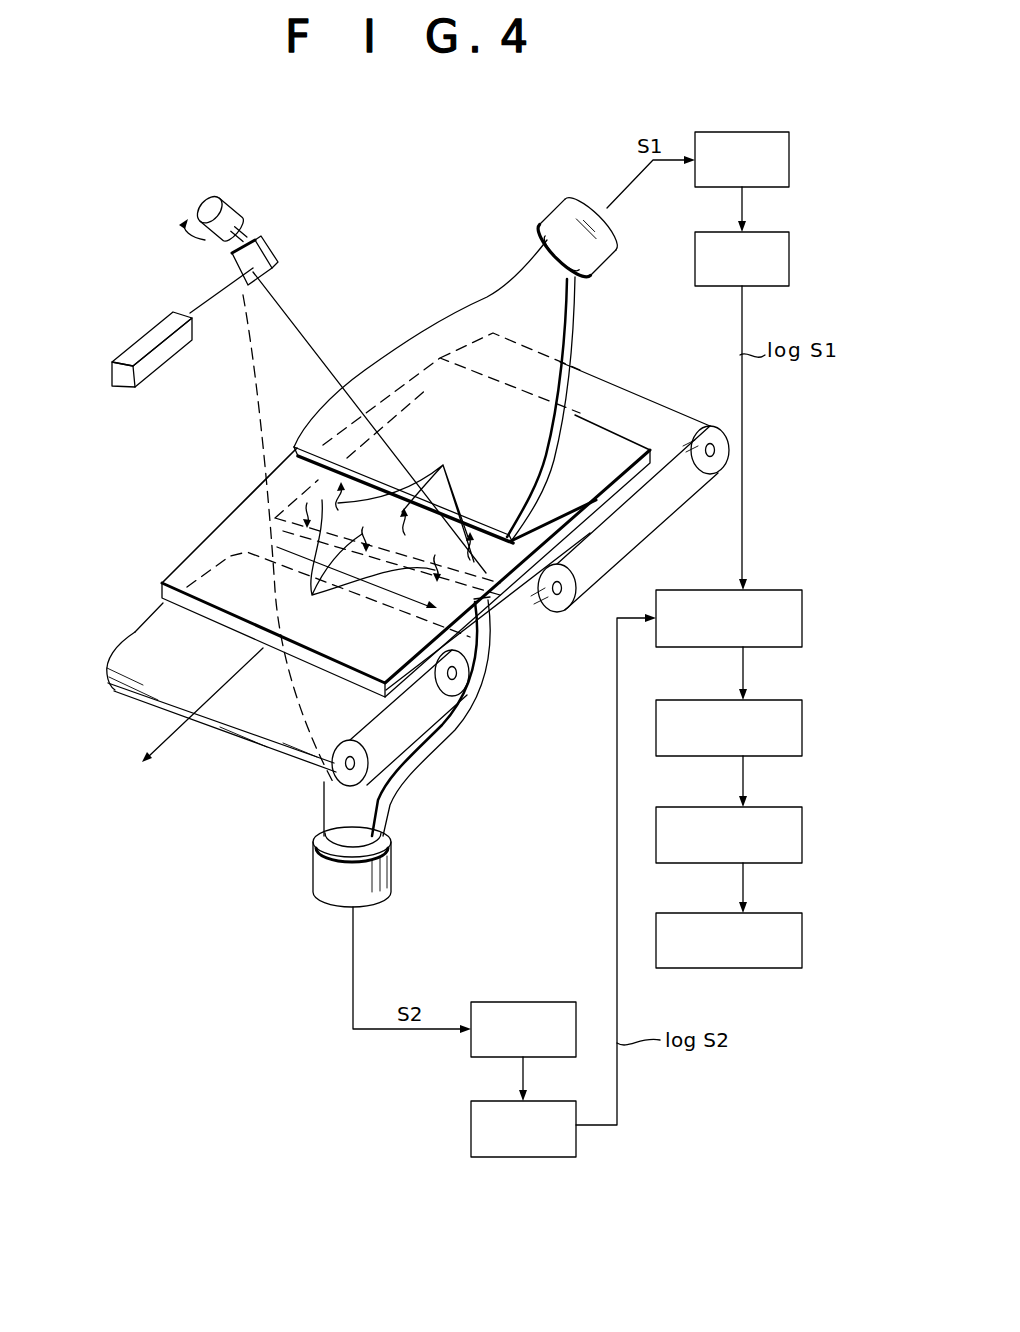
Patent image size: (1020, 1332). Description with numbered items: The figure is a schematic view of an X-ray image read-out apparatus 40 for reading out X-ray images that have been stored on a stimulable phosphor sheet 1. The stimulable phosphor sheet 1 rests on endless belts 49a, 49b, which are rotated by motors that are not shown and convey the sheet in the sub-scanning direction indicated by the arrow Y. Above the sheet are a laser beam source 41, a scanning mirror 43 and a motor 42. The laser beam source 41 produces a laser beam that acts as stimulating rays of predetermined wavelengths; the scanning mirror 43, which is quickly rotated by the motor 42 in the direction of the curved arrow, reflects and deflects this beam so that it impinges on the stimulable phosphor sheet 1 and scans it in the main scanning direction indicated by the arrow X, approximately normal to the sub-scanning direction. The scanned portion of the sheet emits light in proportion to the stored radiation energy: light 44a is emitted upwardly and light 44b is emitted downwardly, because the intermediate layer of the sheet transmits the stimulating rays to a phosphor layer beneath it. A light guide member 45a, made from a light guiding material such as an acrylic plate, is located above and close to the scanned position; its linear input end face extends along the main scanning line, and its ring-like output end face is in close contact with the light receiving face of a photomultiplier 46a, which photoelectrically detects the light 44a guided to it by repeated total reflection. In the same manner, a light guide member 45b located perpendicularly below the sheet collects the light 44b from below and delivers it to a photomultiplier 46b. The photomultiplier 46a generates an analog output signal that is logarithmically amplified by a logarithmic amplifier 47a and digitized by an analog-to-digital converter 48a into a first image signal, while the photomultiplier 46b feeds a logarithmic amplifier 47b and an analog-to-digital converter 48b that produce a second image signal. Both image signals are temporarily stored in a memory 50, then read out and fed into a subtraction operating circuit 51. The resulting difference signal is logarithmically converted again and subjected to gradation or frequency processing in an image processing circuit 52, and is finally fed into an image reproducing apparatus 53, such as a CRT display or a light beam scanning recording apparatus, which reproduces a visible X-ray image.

The stimulable phosphor sheet 1 is at (227, 530).
The X-ray image read-out apparatus 40 is at (168, 246).
The laser beam source 41 is at (172, 316).
The motor 42 is at (237, 222).
The scanning mirror 43 is at (275, 264).
The light emitted from upper surface side 44a is at (406, 500).
The light emitted from lower surface side 44b is at (363, 561).
The light guide member 45a is at (424, 323).
The light guide member 45b is at (488, 692).
The photomultiplier 46a is at (563, 216).
The photomultiplier 46b is at (393, 876).
The logarithmic amplifier 47a is at (738, 132).
The logarithmic amplifier 47b is at (558, 1002).
The analog-to-digital converter 48a is at (790, 253).
The analog-to-digital converter 48b is at (471, 1123).
The endless belt 49a is at (633, 553).
The endless belt 49b is at (136, 632).
The memory 50 is at (803, 612).
The subtraction operating circuit 51 is at (803, 724).
The image processing circuit 52 is at (803, 835).
The image reproducing apparatus 53 is at (803, 940).